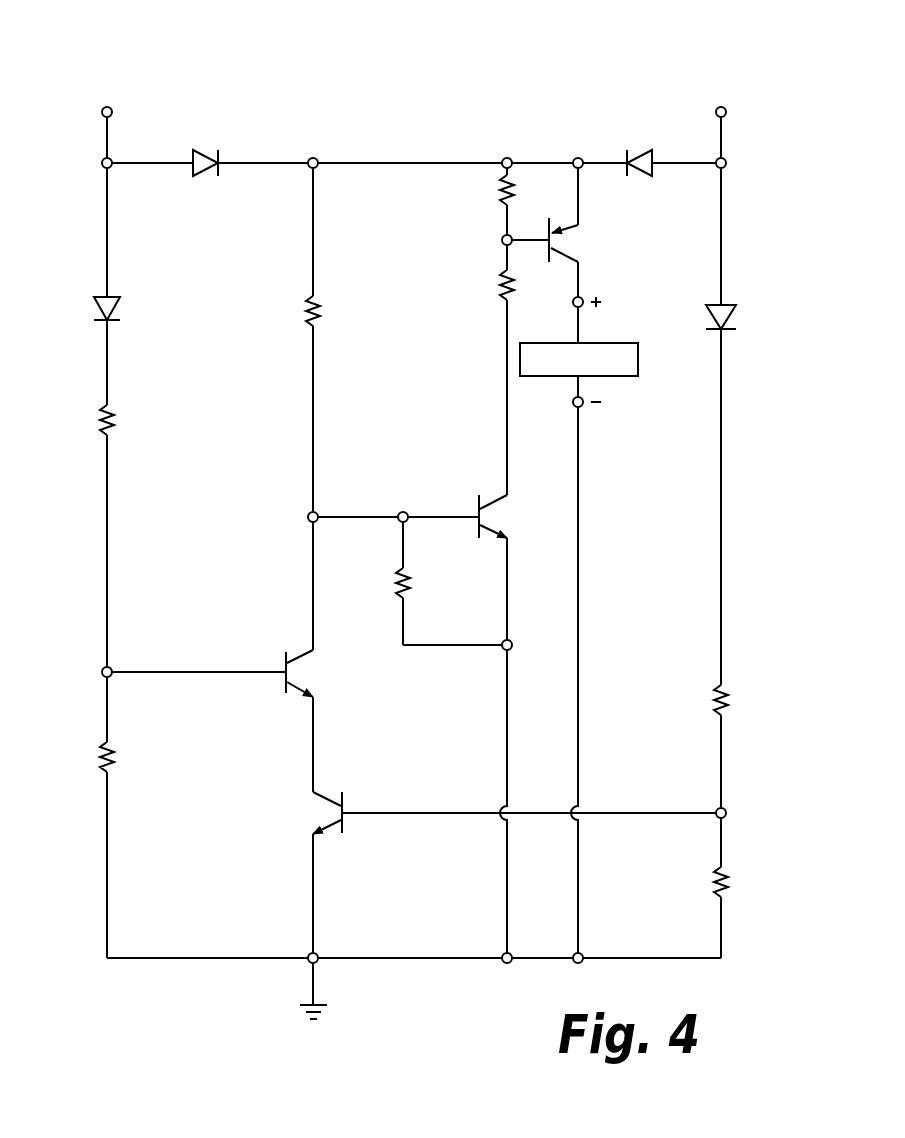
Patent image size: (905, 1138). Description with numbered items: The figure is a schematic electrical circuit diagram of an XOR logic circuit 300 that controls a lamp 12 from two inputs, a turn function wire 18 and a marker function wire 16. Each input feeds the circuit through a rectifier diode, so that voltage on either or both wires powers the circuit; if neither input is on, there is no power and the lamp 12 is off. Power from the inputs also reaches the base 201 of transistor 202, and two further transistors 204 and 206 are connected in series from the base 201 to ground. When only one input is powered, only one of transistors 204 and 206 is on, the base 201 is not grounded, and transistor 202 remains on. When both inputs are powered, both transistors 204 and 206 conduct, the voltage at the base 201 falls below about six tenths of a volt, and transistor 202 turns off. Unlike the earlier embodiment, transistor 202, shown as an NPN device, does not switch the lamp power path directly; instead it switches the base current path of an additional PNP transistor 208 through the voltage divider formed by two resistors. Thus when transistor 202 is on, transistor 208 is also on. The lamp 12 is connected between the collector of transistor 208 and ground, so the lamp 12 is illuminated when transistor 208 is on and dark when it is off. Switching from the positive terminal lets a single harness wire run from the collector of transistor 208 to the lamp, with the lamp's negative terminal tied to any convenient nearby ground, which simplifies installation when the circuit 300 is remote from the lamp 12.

The XOR logic circuit 300 is at (611, 80).
The turn function wire 18 is at (107, 128).
The marker function wire 16 is at (721, 130).
The lamp 12 is at (638, 353).
The base of transistor 202 201 is at (438, 513).
The transistor 202 is at (521, 485).
The transistor 204 is at (372, 670).
The transistor 206 is at (258, 808).
The additional transistor 208 is at (590, 266).